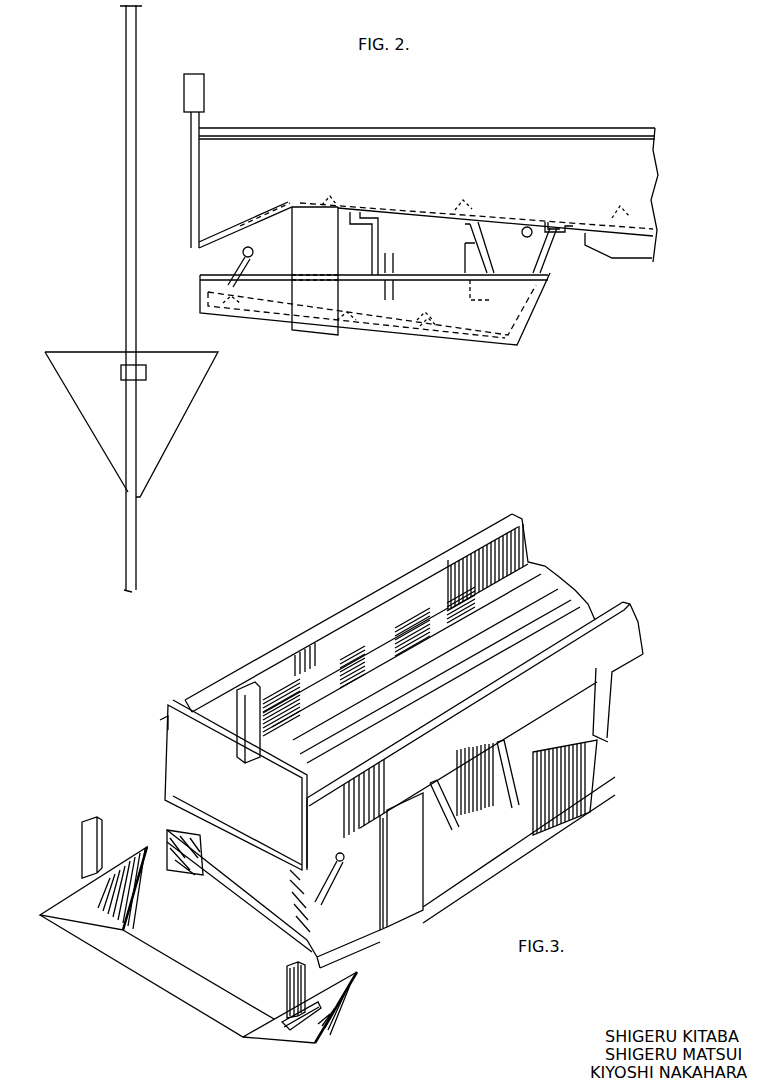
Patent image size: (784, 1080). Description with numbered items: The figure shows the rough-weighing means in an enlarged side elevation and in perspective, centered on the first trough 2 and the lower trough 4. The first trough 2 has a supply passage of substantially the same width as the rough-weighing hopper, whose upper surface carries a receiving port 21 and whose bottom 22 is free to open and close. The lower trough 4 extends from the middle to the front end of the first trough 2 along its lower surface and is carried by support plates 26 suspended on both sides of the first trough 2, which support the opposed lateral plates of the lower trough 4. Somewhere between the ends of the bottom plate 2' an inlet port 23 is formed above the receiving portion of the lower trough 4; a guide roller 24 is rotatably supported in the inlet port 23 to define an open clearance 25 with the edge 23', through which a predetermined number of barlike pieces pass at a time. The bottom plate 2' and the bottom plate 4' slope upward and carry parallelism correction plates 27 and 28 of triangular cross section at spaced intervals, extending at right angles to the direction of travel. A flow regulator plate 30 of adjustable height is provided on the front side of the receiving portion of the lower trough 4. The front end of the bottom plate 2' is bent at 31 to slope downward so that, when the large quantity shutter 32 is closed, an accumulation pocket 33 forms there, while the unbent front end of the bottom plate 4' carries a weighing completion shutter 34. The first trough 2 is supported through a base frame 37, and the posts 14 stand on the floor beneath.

In FIG. 2, the first trough 2 is at (428, 178).
In FIG. 3, the first trough 2 is at (414, 691).
In FIG. 2, the bottom plate of the first trough 2' is at (476, 201).
In FIG. 3, the bottom plate of the first trough 2' is at (421, 668).
In FIG. 2, the lower trough 4 is at (375, 324).
In FIG. 3, the lower trough 4 is at (391, 872).
In FIG. 3, the bottom plate of the lower trough 4' is at (539, 822).
In FIG. 2, the post 14 is at (126, 78).
In FIG. 3, the post 14 is at (92, 842).
In FIG. 3, the receiving port 21 is at (126, 957).
In FIG. 3, the bottom of the rough-weighing hopper 22 is at (205, 989).
In FIG. 2, the inlet port 23 is at (439, 220).
In FIG. 3, the inlet port 23 is at (524, 633).
In FIG. 2, the edge of the inlet port 23' is at (572, 211).
In FIG. 3, the edge of the inlet port 23' is at (553, 628).
In FIG. 2, the guide roller 24 is at (531, 237).
In FIG. 3, the guide roller 24 is at (435, 627).
In FIG. 2, the open clearance 25 is at (548, 210).
In FIG. 3, the open clearance 25 is at (490, 645).
In FIG. 2, the support plate 26 is at (305, 258).
In FIG. 3, the support plate 26 is at (400, 910).
In FIG. 2, the parallelism correction plate 27 is at (332, 197).
In FIG. 3, the parallelism correction plate 27 is at (441, 683).
In FIG. 2, the parallelism correction plate 28 is at (233, 305).
In FIG. 2, the flow regulator plate 30 is at (462, 295).
In FIG. 3, the flow regulator plate 30 is at (507, 797).
In FIG. 2, the bend of the bottom plate 31 is at (268, 201).
In FIG. 3, the bend of the bottom plate 31 is at (320, 790).
In FIG. 2, the large quantity shutter 32 is at (190, 156).
In FIG. 3, the large quantity shutter 32 is at (190, 730).
In FIG. 2, the accumulation pocket 33 is at (220, 193).
In FIG. 3, the accumulation pocket 33 is at (182, 762).
In FIG. 2, the weighing completion shutter 34 is at (233, 262).
In FIG. 3, the weighing completion shutter 34 is at (257, 892).
In FIG. 2, the base frame 37 is at (650, 255).